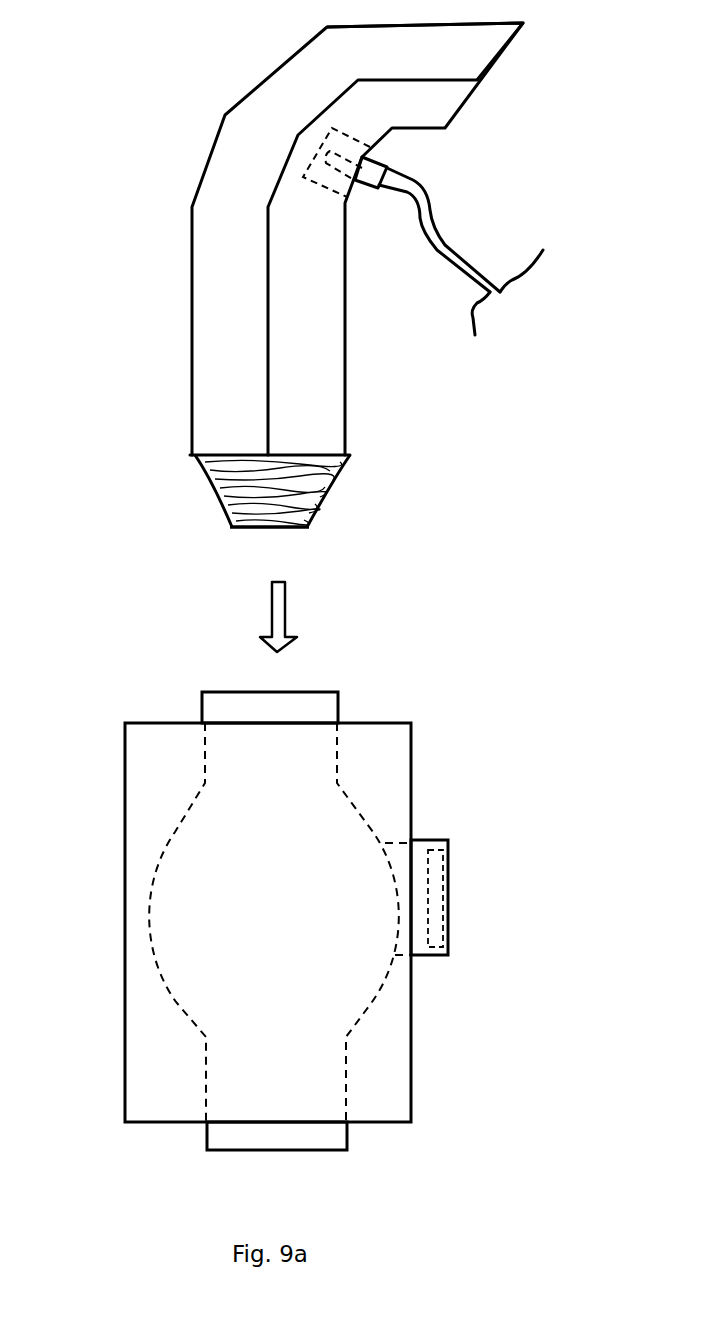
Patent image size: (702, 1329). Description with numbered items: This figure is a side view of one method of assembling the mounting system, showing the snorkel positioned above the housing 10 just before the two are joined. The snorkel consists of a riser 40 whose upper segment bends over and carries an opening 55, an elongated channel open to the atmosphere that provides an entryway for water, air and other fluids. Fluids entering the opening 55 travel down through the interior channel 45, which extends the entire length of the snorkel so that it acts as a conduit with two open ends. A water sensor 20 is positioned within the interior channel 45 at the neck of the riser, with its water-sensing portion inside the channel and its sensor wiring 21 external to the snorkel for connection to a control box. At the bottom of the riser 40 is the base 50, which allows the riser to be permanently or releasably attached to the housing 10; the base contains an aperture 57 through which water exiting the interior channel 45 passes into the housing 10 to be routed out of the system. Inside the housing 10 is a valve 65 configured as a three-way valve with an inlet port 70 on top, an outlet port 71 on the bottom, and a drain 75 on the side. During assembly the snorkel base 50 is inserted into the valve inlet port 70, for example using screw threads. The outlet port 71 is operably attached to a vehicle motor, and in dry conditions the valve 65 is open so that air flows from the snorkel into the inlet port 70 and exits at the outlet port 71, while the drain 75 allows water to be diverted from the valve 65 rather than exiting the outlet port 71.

The housing 10 is at (146, 753).
The water sensor 20 is at (372, 176).
The sensor wiring 21 is at (437, 230).
The riser 40 is at (315, 276).
The interior channel 45 is at (300, 365).
The base 50 is at (250, 492).
The opening 55 is at (493, 70).
The aperture 57 is at (273, 528).
The valve 65 is at (292, 917).
The inlet port 70 is at (307, 692).
The outlet port 71 is at (275, 1152).
The drain 75 is at (448, 840).